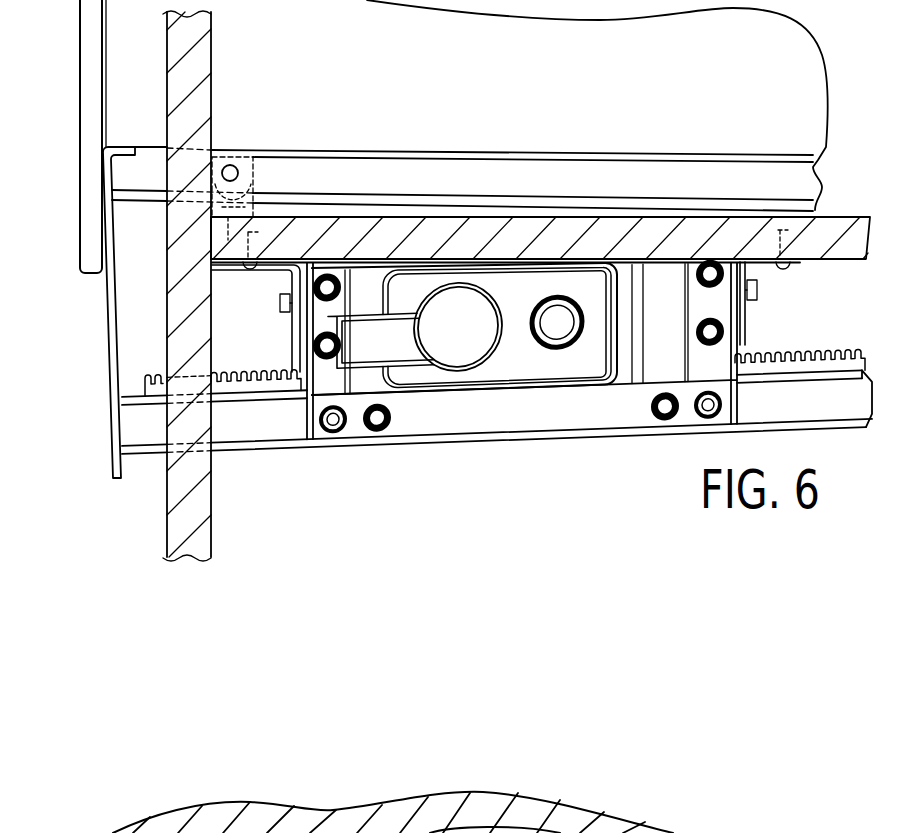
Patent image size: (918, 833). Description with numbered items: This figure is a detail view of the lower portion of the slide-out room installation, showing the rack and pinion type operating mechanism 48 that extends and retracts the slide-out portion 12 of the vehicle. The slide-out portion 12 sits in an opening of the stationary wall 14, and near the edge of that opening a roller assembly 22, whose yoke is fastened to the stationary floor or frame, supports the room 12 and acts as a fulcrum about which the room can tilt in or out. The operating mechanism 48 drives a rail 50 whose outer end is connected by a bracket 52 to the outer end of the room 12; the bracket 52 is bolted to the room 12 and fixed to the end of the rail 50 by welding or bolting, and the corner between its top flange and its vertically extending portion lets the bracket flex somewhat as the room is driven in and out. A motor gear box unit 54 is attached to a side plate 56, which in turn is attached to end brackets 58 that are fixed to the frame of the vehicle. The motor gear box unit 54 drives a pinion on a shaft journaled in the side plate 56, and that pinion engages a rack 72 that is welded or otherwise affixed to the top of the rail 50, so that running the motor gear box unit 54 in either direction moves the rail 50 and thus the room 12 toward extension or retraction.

The slide-out portion 12 is at (80, 78).
The stationary wall 14 is at (213, 85).
The roller assembly 22 is at (258, 172).
The operating mechanism 48 is at (497, 392).
The rail 50 is at (255, 437).
The bracket 52 is at (107, 347).
The motor gear box unit 54 is at (550, 392).
The side plate 56 is at (634, 396).
The end brackets 58 is at (268, 272).
The rack 72 is at (810, 350).